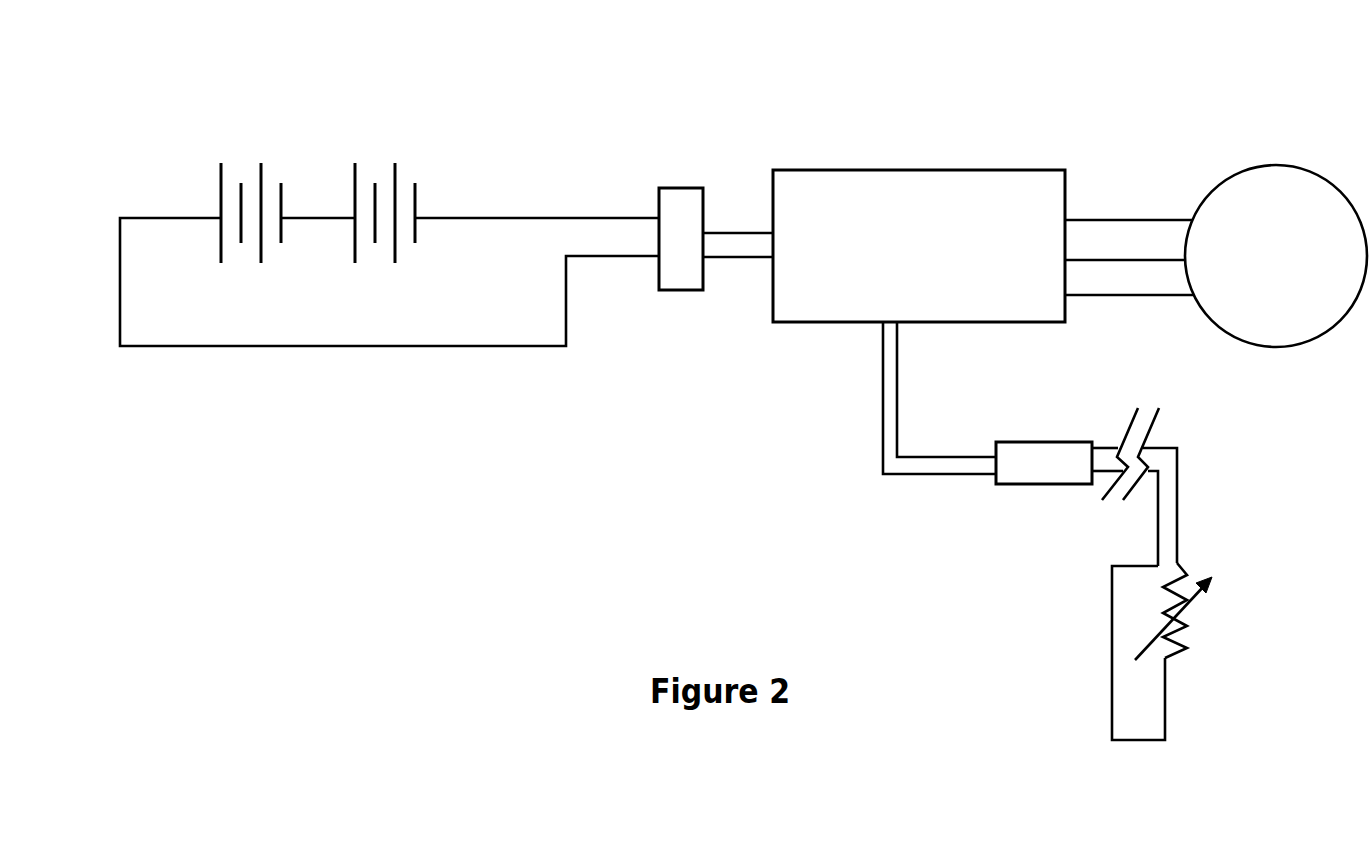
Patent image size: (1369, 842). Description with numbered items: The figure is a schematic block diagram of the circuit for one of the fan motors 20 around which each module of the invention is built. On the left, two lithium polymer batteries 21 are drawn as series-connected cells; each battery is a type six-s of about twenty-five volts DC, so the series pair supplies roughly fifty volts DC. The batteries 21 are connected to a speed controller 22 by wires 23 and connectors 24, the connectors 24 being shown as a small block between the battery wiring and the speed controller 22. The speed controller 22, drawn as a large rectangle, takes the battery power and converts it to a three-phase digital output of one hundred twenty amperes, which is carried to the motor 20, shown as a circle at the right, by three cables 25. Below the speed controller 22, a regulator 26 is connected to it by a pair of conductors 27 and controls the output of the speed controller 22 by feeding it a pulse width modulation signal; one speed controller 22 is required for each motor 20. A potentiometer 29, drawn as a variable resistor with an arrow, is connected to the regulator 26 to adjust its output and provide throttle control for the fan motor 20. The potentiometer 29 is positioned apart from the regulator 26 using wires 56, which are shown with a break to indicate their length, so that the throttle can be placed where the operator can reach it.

The fan motor 20 is at (1258, 360).
The lithium polymer battery 21 is at (248, 168).
The speed controller 22 is at (917, 168).
The wires 23 is at (537, 147).
The connectors 24 is at (678, 182).
The cables 25 is at (1120, 215).
The regulator 26 is at (1013, 490).
The control wire 27 is at (888, 450).
The potentiometer 29 is at (1165, 715).
The wires 56 is at (1175, 523).